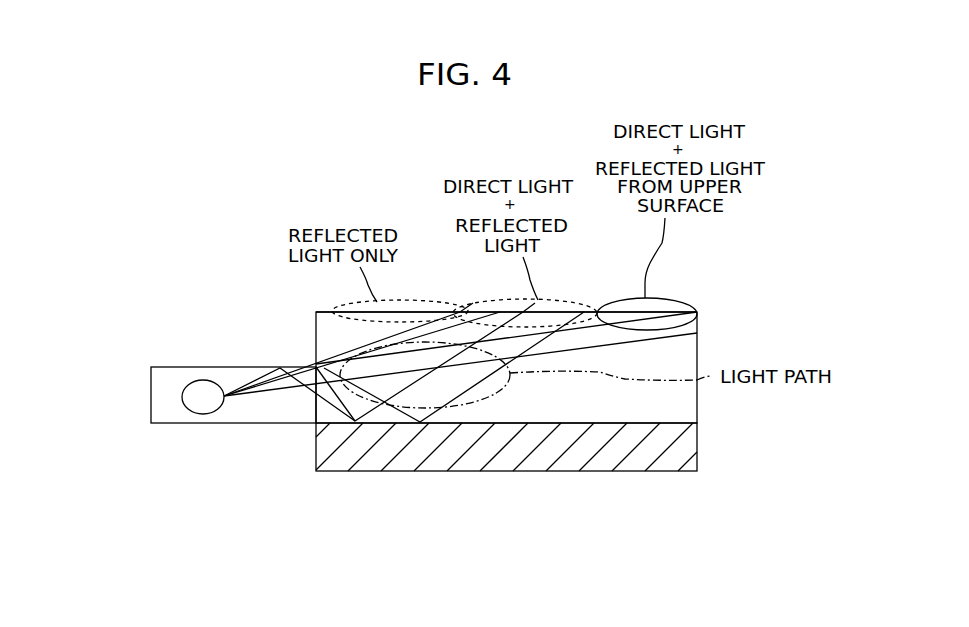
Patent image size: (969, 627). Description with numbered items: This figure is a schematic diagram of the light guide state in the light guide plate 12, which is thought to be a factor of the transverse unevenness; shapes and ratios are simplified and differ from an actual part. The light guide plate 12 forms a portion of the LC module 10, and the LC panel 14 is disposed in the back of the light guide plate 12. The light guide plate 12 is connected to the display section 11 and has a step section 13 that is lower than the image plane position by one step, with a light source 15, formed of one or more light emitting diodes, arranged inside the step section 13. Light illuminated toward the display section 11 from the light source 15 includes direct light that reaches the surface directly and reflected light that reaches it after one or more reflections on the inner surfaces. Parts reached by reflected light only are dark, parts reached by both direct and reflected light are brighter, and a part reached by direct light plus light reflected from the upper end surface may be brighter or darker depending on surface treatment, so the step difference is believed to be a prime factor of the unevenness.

The LC module 10 is at (455, 357).
The display section 11 is at (568, 308).
The light guide plate 12 is at (697, 343).
The step section 13 is at (233, 386).
The LC panel 14 is at (697, 452).
The light source 15 is at (203, 400).